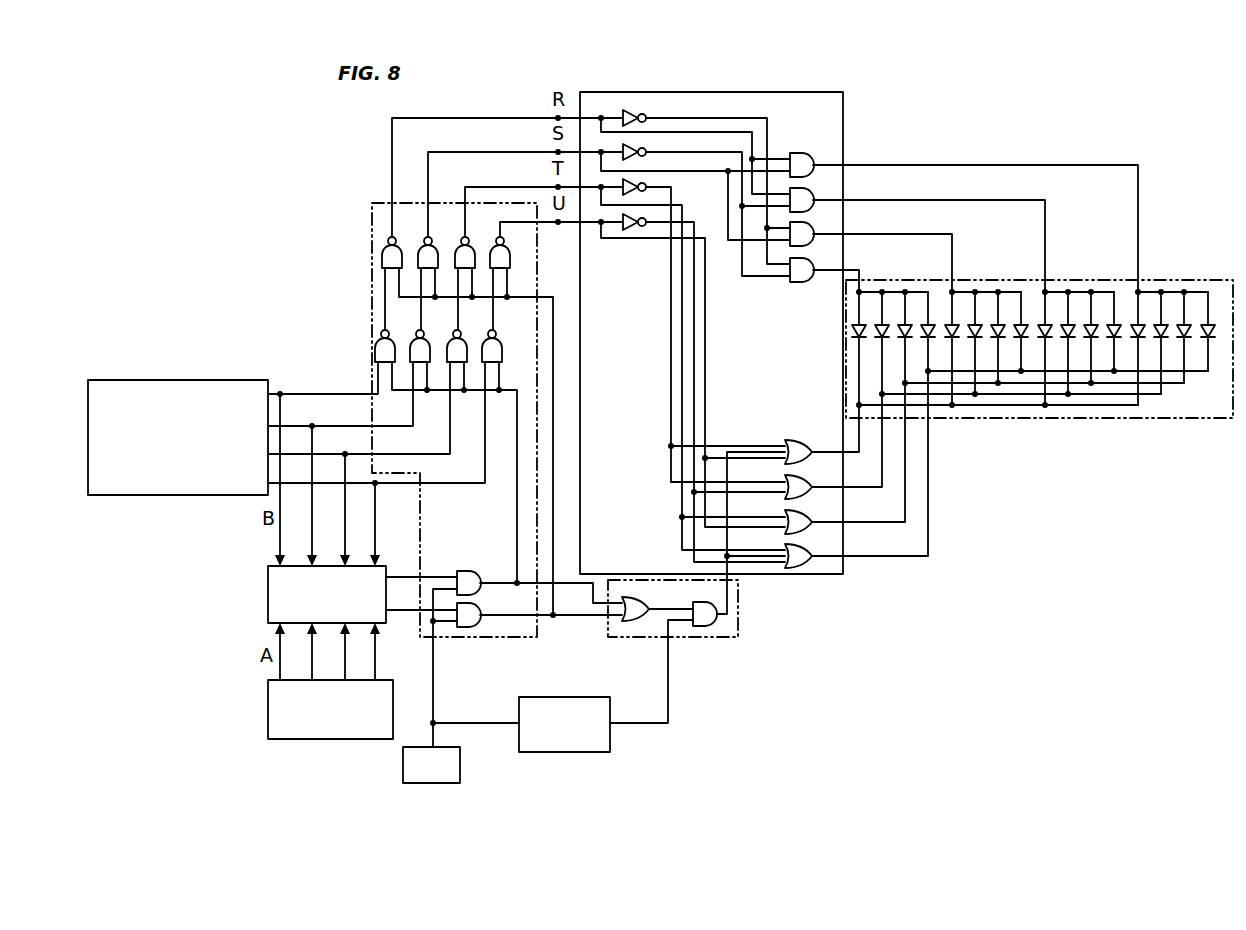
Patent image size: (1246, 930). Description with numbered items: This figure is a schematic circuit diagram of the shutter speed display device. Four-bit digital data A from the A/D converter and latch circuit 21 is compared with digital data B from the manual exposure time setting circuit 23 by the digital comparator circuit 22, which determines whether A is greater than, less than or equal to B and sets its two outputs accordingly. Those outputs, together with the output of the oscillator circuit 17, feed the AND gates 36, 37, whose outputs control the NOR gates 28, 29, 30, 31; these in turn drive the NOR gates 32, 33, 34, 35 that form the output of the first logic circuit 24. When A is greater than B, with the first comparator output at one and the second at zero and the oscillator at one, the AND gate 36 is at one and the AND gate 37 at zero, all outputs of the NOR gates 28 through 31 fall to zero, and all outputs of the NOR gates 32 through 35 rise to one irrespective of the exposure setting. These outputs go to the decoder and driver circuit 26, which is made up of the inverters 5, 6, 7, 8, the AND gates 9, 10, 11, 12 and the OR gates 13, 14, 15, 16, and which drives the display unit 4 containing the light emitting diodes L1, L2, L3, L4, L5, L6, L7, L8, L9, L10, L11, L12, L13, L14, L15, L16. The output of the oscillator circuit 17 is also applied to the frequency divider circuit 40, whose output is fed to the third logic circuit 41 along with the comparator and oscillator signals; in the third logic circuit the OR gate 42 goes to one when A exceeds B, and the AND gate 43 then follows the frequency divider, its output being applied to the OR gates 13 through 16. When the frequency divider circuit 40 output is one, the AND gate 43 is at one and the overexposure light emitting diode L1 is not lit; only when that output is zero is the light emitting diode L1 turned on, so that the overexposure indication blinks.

The display unit 4 is at (1192, 280).
The inverter 5 is at (646, 113).
The inverter 6 is at (646, 150).
The inverter 7 is at (647, 183).
The inverter 8 is at (639, 227).
The AND gate 9 is at (803, 154).
The AND gate 10 is at (816, 196).
The AND gate 11 is at (816, 230).
The AND gate 12 is at (816, 264).
The OR gate 13 is at (796, 443).
The OR gate 14 is at (816, 476).
The OR gate 15 is at (816, 511).
The OR gate 16 is at (816, 545).
The oscillator circuit 17 is at (460, 767).
The A/D converter and latch circuit 21 is at (388, 682).
The digital comparator circuit 22 is at (382, 565).
The manual exposure time setting circuit 23 is at (180, 380).
The first logic circuit 24 is at (372, 228).
The decoder and driver circuit 26 is at (843, 130).
The NOR gate 28 is at (379, 335).
The NOR gate 29 is at (415, 333).
The NOR gate 30 is at (452, 333).
The NOR gate 31 is at (495, 334).
The NOR gate 32 is at (388, 238).
The NOR gate 33 is at (432, 237).
The NOR gate 34 is at (469, 237).
The NOR gate 35 is at (505, 243).
The AND gate 36 is at (464, 574).
The AND gate 37 is at (476, 612).
The frequency divider circuit 40 is at (592, 697).
The third logic circuit 41 is at (738, 622).
The OR gate 42 is at (634, 597).
The AND gate 43 is at (710, 627).
The light emitting diode L1 is at (1208, 345).
The light emitting diode L2 is at (1186, 330).
The light emitting diode L3 is at (1161, 345).
The light emitting diode L4 is at (1138, 323).
The light emitting diode L5 is at (1114, 345).
The light emitting diode L6 is at (1091, 323).
The light emitting diode L7 is at (1068, 345).
The light emitting diode L8 is at (1045, 323).
The light emitting diode L9 is at (1021, 345).
The light emitting diode L10 is at (998, 323).
The light emitting diode L11 is at (975, 345).
The light emitting diode L12 is at (952, 323).
The light emitting diode L13 is at (928, 345).
The light emitting diode L14 is at (905, 342).
The light emitting diode L15 is at (881, 338).
The light emitting diode L16 is at (858, 334).